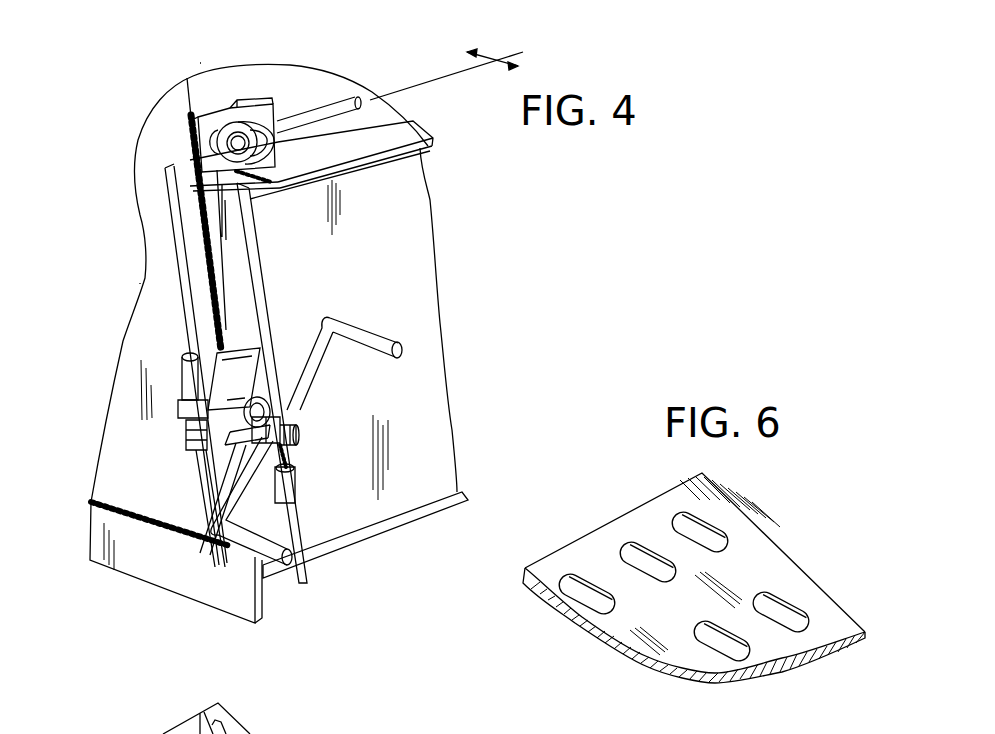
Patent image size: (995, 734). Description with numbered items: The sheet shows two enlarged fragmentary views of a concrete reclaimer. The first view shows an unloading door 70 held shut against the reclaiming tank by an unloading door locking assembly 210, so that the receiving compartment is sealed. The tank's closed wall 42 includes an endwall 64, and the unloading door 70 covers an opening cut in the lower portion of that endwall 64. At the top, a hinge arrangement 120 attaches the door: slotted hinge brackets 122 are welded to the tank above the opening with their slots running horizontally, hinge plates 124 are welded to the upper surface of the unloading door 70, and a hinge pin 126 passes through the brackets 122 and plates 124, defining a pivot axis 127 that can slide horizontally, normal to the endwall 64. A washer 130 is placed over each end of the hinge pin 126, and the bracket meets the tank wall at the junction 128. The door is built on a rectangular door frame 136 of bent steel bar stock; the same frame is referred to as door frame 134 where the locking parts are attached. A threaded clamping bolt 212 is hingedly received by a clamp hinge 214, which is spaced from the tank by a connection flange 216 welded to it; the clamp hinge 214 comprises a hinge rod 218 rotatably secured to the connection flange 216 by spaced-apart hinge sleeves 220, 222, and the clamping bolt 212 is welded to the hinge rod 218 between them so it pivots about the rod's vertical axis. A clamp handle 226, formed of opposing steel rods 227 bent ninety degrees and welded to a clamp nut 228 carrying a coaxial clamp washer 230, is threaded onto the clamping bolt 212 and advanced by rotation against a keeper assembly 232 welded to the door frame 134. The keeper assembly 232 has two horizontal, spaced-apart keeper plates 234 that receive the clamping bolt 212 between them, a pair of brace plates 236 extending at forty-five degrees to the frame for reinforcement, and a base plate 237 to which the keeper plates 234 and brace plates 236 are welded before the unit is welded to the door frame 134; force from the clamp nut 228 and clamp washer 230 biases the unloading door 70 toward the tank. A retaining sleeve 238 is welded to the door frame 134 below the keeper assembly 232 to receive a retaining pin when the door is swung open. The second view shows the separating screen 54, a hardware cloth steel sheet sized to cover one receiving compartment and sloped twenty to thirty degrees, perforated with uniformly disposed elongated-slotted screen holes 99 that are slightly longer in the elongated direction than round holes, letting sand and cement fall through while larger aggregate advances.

In FIG. 4, the mounting assembly 120 is at (118, 133).
In FIG. 4, the slotted hinge bracket 122 is at (214, 108).
In FIG. 4, the washer 130 is at (240, 138).
In FIG. 4, the endwall 64 is at (305, 65).
In FIG. 4, the hinge plate 124 is at (265, 110).
In FIG. 4, the hinge pin 126 is at (355, 95).
In FIG. 4, the pivot axis 127 is at (497, 57).
In FIG. 4, the weld 128 is at (193, 173).
In FIG. 4, the door frame 136 is at (432, 194).
In FIG. 4, the unloading door 70 is at (455, 268).
In FIG. 4, the connection flange 216 is at (142, 284).
In FIG. 4, the brace plate 236 is at (220, 367).
In FIG. 4, the hinge sleeve 220 is at (182, 357).
In FIG. 4, the keeper plate 234 is at (263, 310).
In FIG. 4, the door frame 134 is at (270, 307).
In FIG. 4, the base plate 237 is at (272, 315).
In FIG. 4, the clamp washer 230 is at (273, 367).
In FIG. 4, the clamp handle 226 is at (381, 330).
In FIG. 4, the rods 227 is at (397, 338).
In FIG. 4, the clamp hinge 214 is at (131, 402).
In FIG. 4, the closed wall 42 is at (105, 453).
In FIG. 4, the hinge rod 218 is at (175, 435).
In FIG. 4, the clamping bolt 212 is at (312, 420).
In FIG. 4, the adjustment mechanism 210 is at (340, 413).
In FIG. 4, the hinge sleeve 222 is at (197, 443).
In FIG. 4, the clamp nut 228 is at (283, 450).
In FIG. 4, the retaining sleeve 238 is at (297, 498).
In FIG. 4, the keeper assembly 232 is at (183, 543).
In FIG. 6, the separating screen 54 is at (777, 543).
In FIG. 6, the elongated-slotted screen holes 99 is at (712, 650).